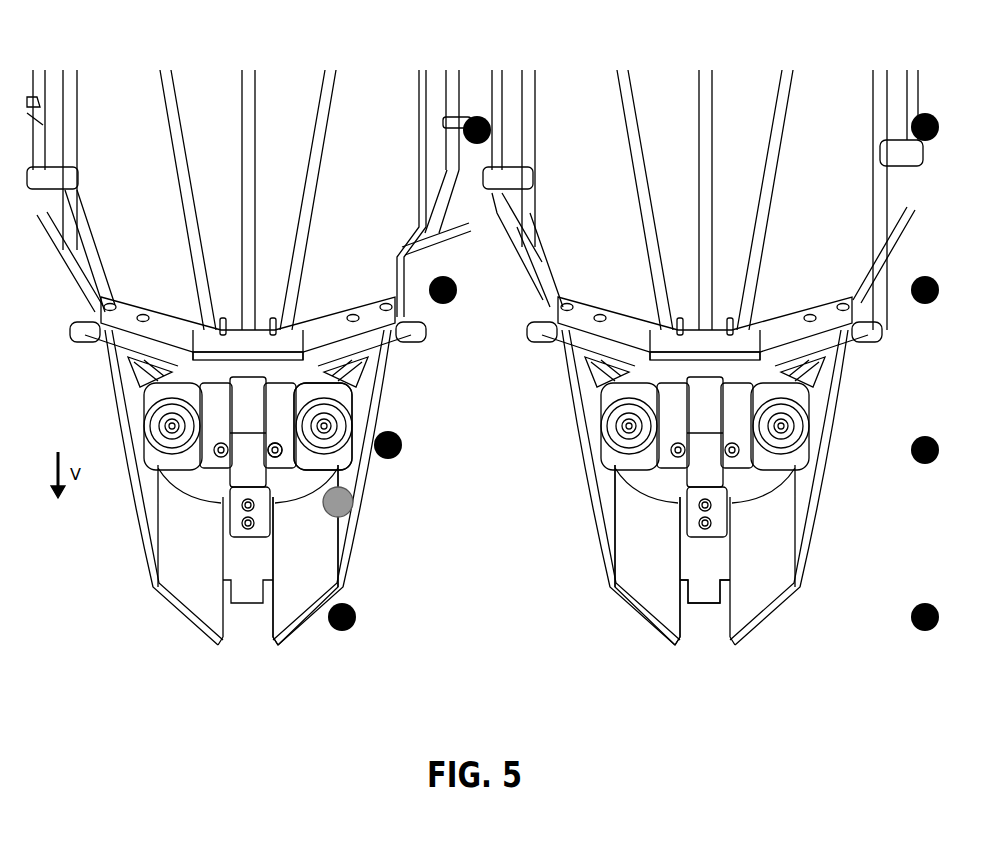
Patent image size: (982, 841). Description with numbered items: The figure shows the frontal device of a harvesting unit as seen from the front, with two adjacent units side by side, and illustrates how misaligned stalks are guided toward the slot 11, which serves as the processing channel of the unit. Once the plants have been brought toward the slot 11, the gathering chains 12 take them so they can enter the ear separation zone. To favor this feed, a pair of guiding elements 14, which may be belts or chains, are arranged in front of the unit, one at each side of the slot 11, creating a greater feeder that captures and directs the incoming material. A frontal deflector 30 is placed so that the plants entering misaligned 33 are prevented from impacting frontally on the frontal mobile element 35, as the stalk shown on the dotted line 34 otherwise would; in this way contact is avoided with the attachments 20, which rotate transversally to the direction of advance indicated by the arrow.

The slot 11 is at (475, 195).
The gathering chains 12 is at (887, 228).
The guiding elements 14 is at (305, 360).
The attachments 20 is at (71, 243).
The frontal deflector 30 is at (739, 586).
The plants entering misaligned 33 is at (365, 580).
The stalk shown on the dotted line 34 is at (382, 512).
The frontal mobile element 35 is at (367, 468).